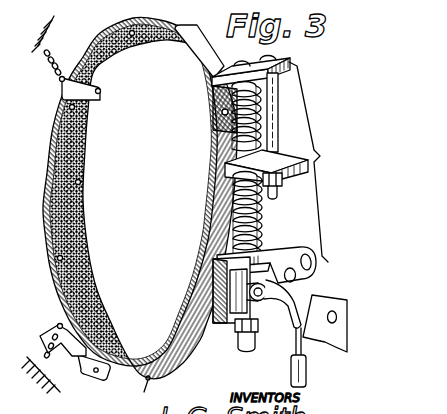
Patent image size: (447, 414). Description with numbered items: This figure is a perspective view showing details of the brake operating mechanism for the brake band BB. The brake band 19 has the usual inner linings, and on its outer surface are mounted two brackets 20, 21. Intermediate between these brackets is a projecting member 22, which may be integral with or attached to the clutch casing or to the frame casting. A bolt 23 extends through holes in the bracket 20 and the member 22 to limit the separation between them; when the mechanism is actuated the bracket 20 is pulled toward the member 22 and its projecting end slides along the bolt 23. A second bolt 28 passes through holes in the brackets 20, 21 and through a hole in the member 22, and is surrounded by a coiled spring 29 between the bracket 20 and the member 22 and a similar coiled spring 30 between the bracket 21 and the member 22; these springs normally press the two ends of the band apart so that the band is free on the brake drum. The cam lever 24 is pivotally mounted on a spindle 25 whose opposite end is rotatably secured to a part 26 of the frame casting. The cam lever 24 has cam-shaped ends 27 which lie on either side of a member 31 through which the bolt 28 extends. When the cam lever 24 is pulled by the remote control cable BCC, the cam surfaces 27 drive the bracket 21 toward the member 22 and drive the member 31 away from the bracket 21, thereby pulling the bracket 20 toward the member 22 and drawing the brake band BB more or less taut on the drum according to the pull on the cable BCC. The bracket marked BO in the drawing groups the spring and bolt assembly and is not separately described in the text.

The brake band 19 is at (70, 206).
The brake band BB is at (55, 122).
The bracket 20 is at (224, 70).
The bolt 23 is at (277, 118).
The projecting member 22 is at (281, 158).
The coiled spring 29 is at (237, 146).
The bolt 28 is at (237, 188).
The coiled spring 30 is at (237, 203).
The bracket 21 is at (253, 258).
The spring assembly brace BO is at (314, 162).
The cam-shaped ends 27 is at (205, 296).
The cam lever 24 is at (298, 278).
The spindle 25 is at (290, 308).
The part 26 is at (327, 340).
The remote control cable BCC is at (292, 364).
The member 31 is at (243, 335).